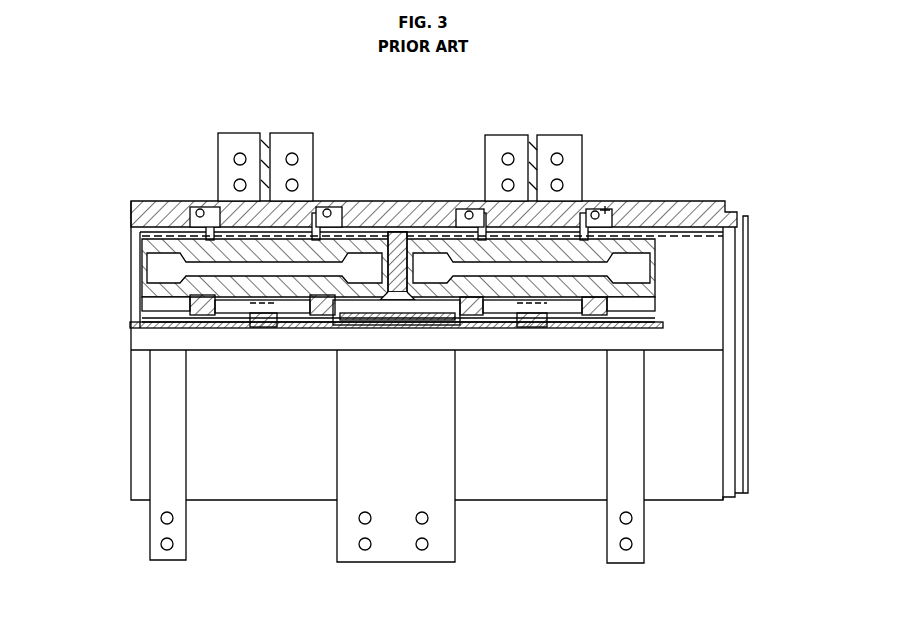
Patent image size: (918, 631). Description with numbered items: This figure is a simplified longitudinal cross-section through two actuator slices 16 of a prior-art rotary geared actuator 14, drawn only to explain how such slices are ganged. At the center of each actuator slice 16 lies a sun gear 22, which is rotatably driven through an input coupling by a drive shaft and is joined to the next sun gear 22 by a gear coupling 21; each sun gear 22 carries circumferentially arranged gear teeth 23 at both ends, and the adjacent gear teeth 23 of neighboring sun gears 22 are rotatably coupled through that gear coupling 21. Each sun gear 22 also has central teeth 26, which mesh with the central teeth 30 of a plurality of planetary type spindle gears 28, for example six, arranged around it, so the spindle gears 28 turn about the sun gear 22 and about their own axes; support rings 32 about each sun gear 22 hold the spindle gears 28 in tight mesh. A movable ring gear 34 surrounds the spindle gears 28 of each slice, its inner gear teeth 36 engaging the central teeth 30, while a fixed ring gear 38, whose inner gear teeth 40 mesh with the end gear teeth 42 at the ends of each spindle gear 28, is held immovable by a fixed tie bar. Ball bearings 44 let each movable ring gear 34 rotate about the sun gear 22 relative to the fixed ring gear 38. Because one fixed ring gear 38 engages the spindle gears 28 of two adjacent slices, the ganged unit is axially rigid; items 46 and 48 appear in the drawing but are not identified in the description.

The rotary geared actuator 14 is at (598, 110).
The actuator slice 16 is at (128, 177).
The gear coupling 21 is at (393, 327).
The sun gear 22 is at (150, 328).
The gear teeth 23 is at (150, 317).
The central teeth 26 is at (265, 329).
The spindle gear 28 is at (162, 254).
The central teeth 30 is at (298, 305).
The support ring 32 is at (202, 316).
The movable ring gear 34 is at (303, 168).
The inner gear teeth 36 is at (210, 232).
The fixed ring gear 38 is at (167, 210).
The inner gear teeth 40 is at (138, 232).
The end gear teeth 42 is at (150, 302).
The ball bearings 44 is at (328, 209).
The seal pocket 46 is at (460, 209).
The pin 48 is at (610, 212).